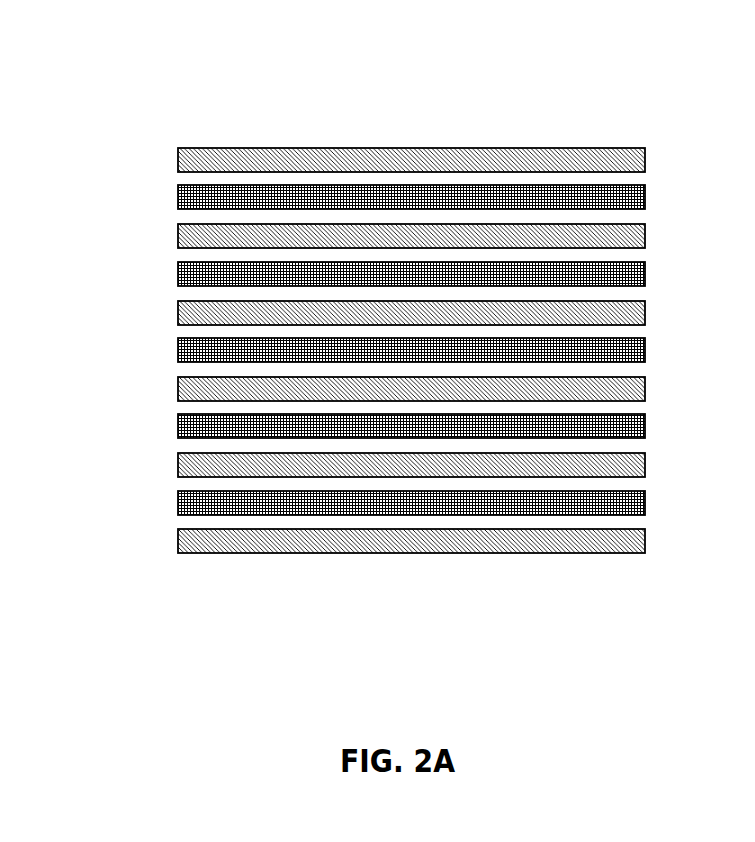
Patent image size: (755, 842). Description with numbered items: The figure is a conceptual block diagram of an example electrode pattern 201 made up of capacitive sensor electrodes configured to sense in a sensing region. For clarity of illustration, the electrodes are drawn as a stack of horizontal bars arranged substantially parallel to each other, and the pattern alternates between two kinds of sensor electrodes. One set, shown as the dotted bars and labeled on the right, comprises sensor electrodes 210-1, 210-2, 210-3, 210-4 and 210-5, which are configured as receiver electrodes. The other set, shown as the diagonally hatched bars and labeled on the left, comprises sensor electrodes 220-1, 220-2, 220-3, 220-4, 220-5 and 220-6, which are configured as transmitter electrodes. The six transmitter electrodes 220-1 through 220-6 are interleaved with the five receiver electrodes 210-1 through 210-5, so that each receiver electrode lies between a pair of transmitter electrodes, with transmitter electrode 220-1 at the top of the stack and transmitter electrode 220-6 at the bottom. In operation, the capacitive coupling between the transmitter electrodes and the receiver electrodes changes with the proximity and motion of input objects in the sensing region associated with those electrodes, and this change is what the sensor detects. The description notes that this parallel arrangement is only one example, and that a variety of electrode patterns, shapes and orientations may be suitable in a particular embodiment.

The multilayer electrode stack 201 is at (270, 38).
The sensor electrode 210-1 is at (645, 509).
The sensor electrode 210-2 is at (645, 432).
The sensor electrode 210-3 is at (645, 356).
The sensor electrode 210-4 is at (645, 280).
The sensor electrode 210-5 is at (645, 203).
The sensor electrode 220-1 is at (178, 162).
The sensor electrode 220-2 is at (178, 238).
The sensor electrode 220-3 is at (178, 315).
The sensor electrode 220-4 is at (178, 391).
The sensor electrode 220-5 is at (178, 467).
The sensor electrode 220-6 is at (178, 543).